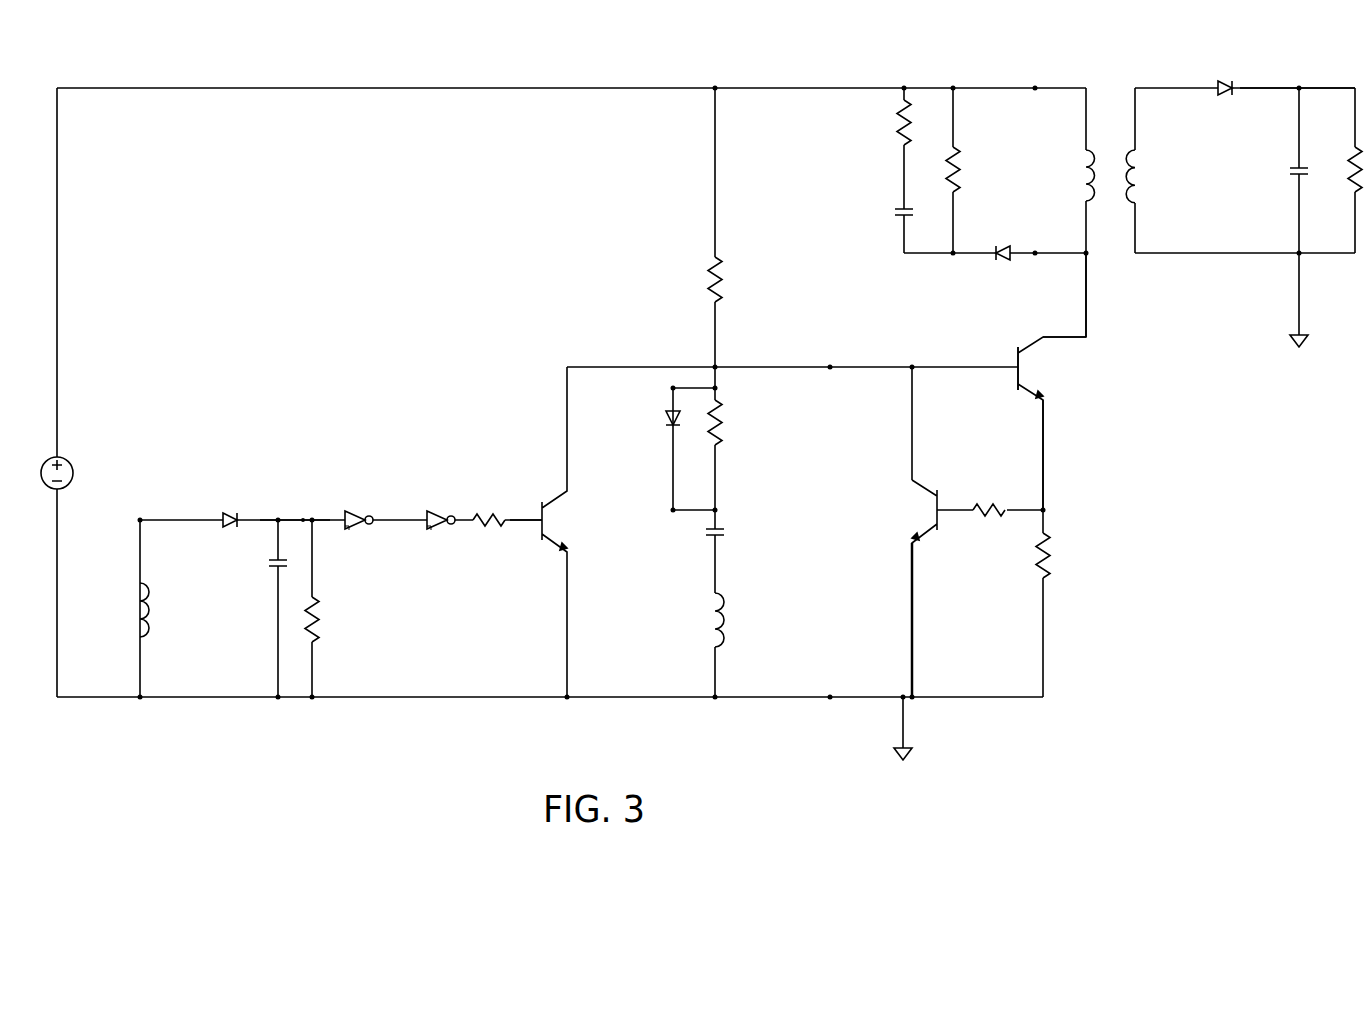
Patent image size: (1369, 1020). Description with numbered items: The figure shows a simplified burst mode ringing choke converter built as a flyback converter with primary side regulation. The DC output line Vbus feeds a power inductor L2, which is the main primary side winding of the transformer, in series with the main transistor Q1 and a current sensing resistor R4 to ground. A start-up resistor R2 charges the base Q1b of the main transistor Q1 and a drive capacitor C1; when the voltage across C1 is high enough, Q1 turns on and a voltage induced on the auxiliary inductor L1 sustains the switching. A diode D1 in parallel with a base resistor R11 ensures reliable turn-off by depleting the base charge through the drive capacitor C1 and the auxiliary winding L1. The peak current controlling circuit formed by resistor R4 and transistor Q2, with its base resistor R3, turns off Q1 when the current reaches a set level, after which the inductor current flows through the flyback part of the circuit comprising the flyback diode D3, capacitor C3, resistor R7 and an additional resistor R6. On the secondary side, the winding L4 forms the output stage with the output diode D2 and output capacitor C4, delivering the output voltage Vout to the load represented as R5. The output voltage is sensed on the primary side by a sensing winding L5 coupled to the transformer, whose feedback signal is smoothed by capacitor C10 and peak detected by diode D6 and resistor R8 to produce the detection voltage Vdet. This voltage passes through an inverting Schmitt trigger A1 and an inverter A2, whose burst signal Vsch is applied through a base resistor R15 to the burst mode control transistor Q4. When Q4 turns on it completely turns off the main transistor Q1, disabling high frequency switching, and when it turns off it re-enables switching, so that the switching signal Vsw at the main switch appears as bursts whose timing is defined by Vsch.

The DC output line Vbus is at (89, 469).
The sensing winding L5 is at (159, 610).
The peak detector diode D6 is at (235, 503).
The detection voltage Vdet is at (295, 503).
The smoothing capacitor C10 is at (262, 575).
The peak detector resistor R8 is at (329, 619).
The inverting Schmitt trigger A1 is at (361, 505).
The inverter A2 is at (440, 505).
The base resistor R15 is at (496, 503).
The Schmitt trigger output signal Vsch is at (515, 540).
The burst mode control transistor Q4 is at (573, 532).
The start-up resistor R2 is at (698, 281).
The diode D1 is at (660, 432).
The base resistor R11 is at (740, 424).
The drive capacitor C1 is at (731, 543).
The auxiliary inductor L1 is at (738, 620).
The peak current controlling transistor Q2 is at (910, 588).
The base resistor R3 is at (989, 529).
The current sensing resistor R4 is at (1059, 555).
The main transistor Q1 is at (1052, 423).
The base of the main transistor Q1b is at (1018, 367).
The switching burst signal Vsw is at (1111, 295).
The flyback circuit resistor R6 is at (891, 122).
The flyback capacitor C3 is at (892, 195).
The flyback resistor R7 is at (972, 169).
The flyback diode D3 is at (1008, 275).
The power inductor L2 is at (1070, 175).
The secondary side inductor L4 is at (1150, 176).
The output diode D2 is at (1228, 103).
The output voltage Vout is at (1297, 68).
The output capacitor C4 is at (1285, 178).
The output load R5 is at (1345, 162).